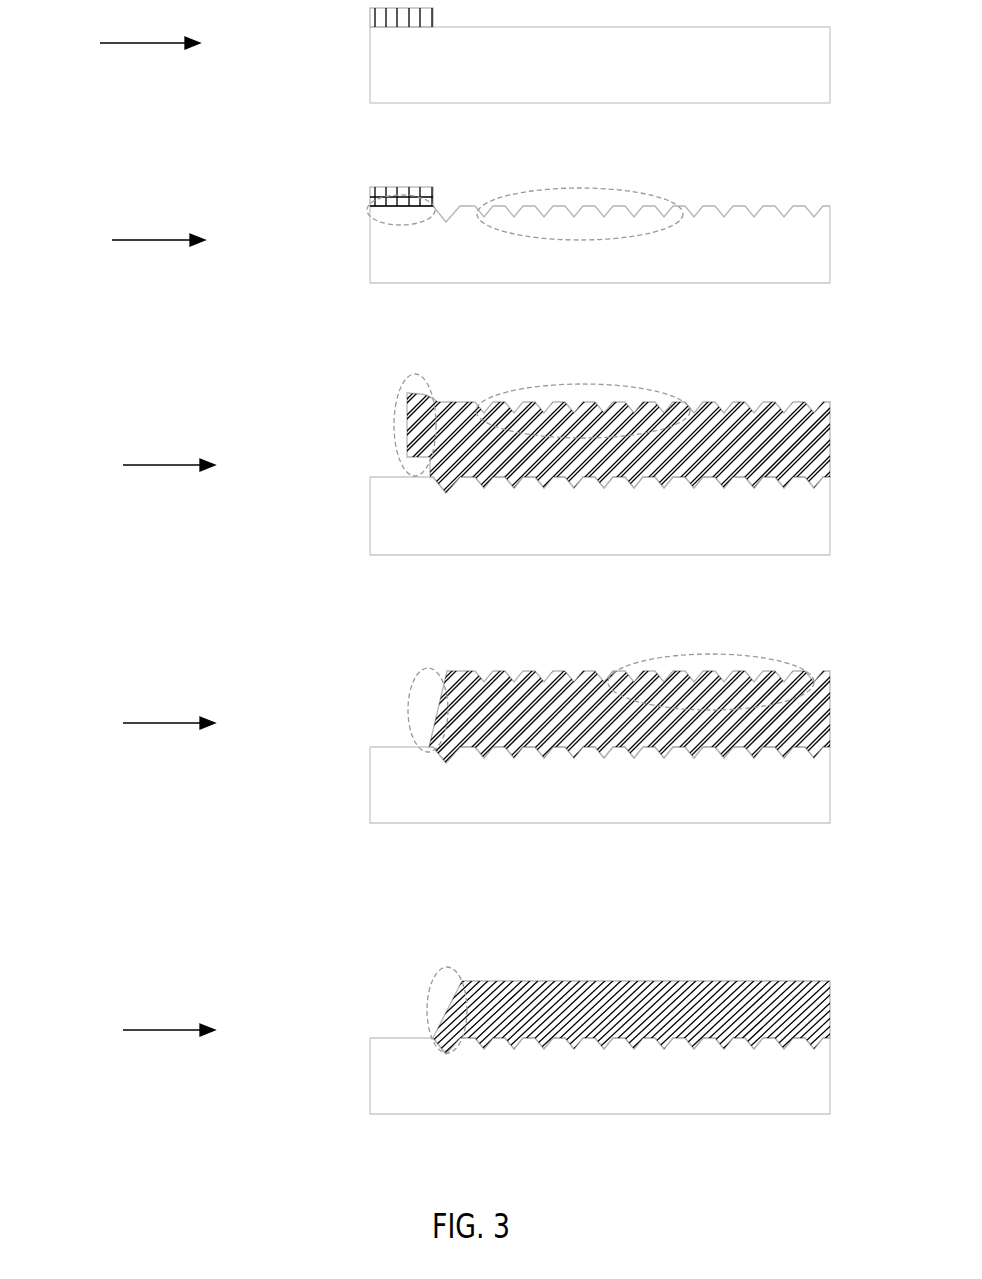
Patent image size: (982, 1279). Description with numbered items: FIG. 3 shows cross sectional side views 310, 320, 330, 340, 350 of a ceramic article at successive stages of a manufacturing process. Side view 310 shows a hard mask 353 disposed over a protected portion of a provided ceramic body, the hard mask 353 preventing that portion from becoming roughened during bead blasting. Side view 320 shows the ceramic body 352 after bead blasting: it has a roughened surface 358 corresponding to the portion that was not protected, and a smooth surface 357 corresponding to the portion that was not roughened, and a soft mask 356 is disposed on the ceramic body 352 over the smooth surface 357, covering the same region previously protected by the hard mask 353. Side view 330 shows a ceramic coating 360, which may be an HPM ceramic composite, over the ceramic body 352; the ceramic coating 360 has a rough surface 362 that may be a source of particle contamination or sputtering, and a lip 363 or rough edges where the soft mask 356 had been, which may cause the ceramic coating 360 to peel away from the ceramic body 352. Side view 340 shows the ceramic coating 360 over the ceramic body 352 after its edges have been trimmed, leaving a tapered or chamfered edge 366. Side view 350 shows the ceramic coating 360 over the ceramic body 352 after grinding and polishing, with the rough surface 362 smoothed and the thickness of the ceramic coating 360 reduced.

The side view 310 is at (131, 43).
The side view 320 is at (139, 240).
The side view 330 is at (149, 465).
The side view 340 is at (149, 723).
The side view 350 is at (149, 1030).
The ceramic body 352 is at (370, 72).
The hard mask 353 is at (370, 25).
The soft mask 356 is at (396, 192).
The smooth surface 357 is at (368, 210).
The roughened surface 358 is at (573, 188).
The ceramic coating 360 is at (709, 402).
The rough surface 362 is at (577, 384).
The lip 363 is at (395, 418).
The tapered or chamfered edge 366 is at (408, 706).